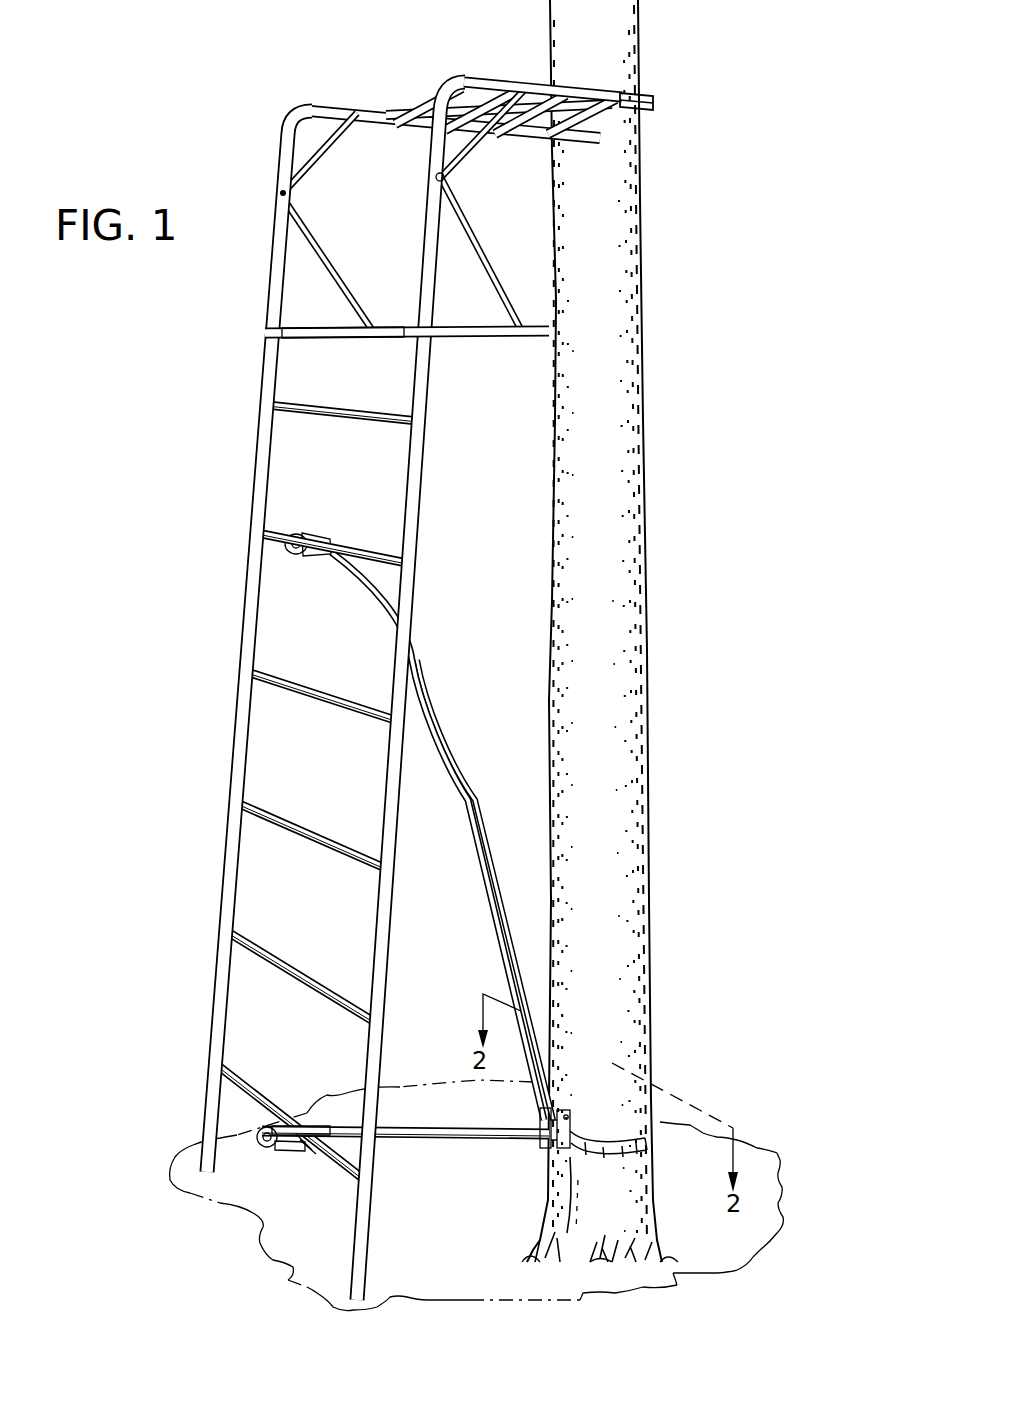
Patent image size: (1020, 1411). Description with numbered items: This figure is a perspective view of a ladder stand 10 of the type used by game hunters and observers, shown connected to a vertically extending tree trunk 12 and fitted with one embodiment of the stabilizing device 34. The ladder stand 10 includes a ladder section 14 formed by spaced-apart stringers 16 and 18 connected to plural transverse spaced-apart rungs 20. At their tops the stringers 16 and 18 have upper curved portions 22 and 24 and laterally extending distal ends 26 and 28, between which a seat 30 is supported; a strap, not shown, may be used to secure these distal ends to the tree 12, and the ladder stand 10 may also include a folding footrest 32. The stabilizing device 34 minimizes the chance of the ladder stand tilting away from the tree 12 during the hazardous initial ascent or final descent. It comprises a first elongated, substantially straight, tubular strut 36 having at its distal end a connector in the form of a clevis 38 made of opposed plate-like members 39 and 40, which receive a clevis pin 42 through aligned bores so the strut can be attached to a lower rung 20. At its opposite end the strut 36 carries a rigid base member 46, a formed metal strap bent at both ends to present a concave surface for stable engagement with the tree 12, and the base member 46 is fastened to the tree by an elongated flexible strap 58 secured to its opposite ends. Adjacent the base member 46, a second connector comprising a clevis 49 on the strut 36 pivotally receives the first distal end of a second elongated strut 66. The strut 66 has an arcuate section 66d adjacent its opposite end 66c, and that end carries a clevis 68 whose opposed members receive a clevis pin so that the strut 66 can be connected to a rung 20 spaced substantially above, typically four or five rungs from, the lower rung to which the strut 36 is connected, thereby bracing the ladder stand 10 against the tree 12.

The ladder stand 10 is at (226, 471).
The tree trunk 12 is at (650, 432).
The ladder section 14 is at (383, 675).
The stringer 16 is at (222, 851).
The stringer 18 is at (396, 918).
The rungs 20 is at (383, 554).
The upper curved portion 22 is at (286, 120).
The upper curved portion 24 is at (455, 84).
The distal end 26 is at (498, 140).
The distal end 28 is at (653, 97).
The seat 30 is at (533, 135).
The folding footrest 32 is at (470, 340).
The stabilizing device 34 is at (359, 792).
The first elongated tubular strut 36 is at (418, 1140).
The clevis 38 is at (305, 1153).
The clevis member 39 is at (285, 1125).
The clevis member 40 is at (288, 1152).
The clevis pin 42 is at (265, 1150).
The rigid base member 46 is at (567, 1257).
The clevis 49 is at (545, 1142).
The flexible strap 58 is at (617, 1133).
The second elongated strut 66 is at (513, 780).
The strut end 66c is at (330, 530).
The arcuate section 66d is at (362, 580).
The clevis 68 is at (318, 557).